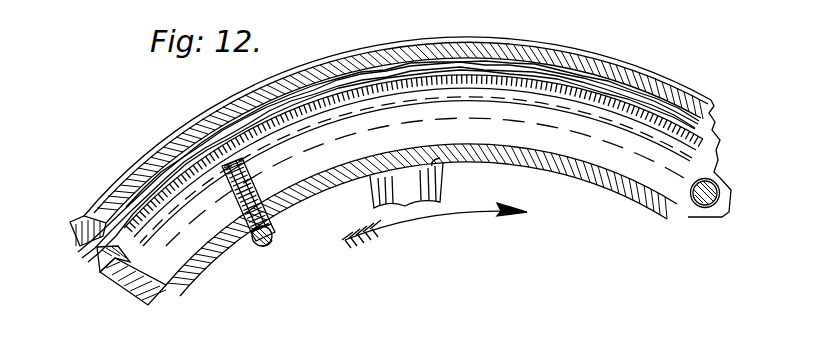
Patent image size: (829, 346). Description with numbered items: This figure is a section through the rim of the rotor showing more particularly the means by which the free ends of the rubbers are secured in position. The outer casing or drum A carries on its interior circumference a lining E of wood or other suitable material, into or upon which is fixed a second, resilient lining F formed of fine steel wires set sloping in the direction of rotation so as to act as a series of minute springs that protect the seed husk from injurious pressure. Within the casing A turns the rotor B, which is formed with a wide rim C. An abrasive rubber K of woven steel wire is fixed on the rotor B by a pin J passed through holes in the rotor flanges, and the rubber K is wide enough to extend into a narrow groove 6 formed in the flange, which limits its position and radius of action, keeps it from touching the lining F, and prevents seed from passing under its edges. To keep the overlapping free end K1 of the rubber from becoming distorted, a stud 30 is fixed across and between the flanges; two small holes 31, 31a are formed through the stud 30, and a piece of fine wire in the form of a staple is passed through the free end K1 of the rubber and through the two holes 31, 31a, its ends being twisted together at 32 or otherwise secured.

The casing or drum A is at (168, 158).
The lining E is at (203, 152).
The resilient lining F is at (230, 148).
The groove 6 is at (198, 208).
The rim C is at (200, 270).
The rubber K is at (118, 264).
The overlapping end of the rubber K1 is at (258, 186).
The stud 30 is at (228, 202).
The hole 31 is at (260, 247).
The hole 31a is at (284, 236).
The twisted wire ends 32 is at (270, 242).
The rotor B is at (406, 183).
The pin J is at (705, 216).